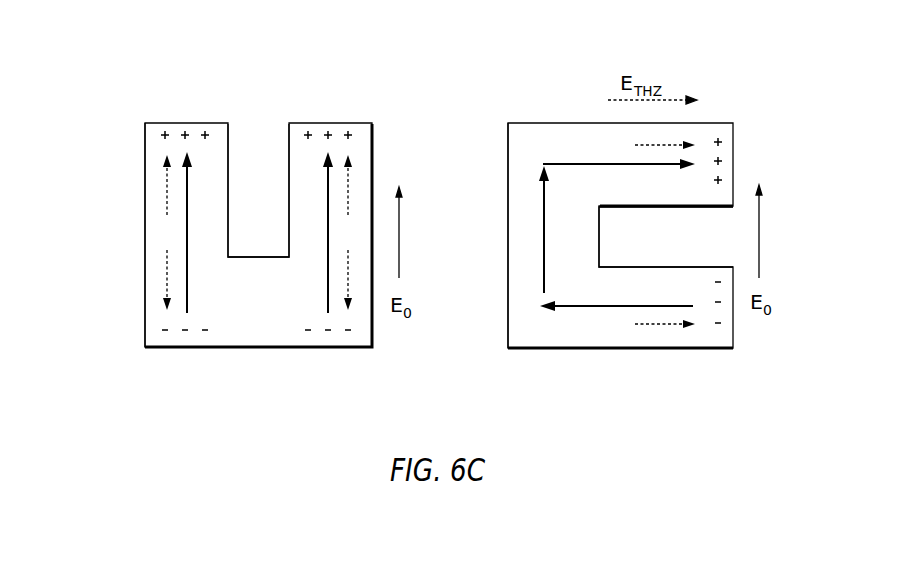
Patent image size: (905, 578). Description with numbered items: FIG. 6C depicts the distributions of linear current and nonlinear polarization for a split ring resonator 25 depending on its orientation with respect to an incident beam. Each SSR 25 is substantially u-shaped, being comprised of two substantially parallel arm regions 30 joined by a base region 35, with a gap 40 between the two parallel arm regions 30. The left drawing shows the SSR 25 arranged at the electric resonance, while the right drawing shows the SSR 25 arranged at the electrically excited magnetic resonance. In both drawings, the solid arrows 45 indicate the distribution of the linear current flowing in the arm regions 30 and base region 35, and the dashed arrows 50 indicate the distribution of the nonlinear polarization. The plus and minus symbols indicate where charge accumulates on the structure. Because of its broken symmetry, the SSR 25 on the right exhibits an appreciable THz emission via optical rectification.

The split ring resonator 25 is at (223, 380).
The arm region 30 is at (145, 168).
The base region 35 is at (145, 320).
The gap 40 is at (252, 130).
The linear current arrows 45 is at (190, 285).
The nonlinear polarization arrows 50 is at (167, 193).